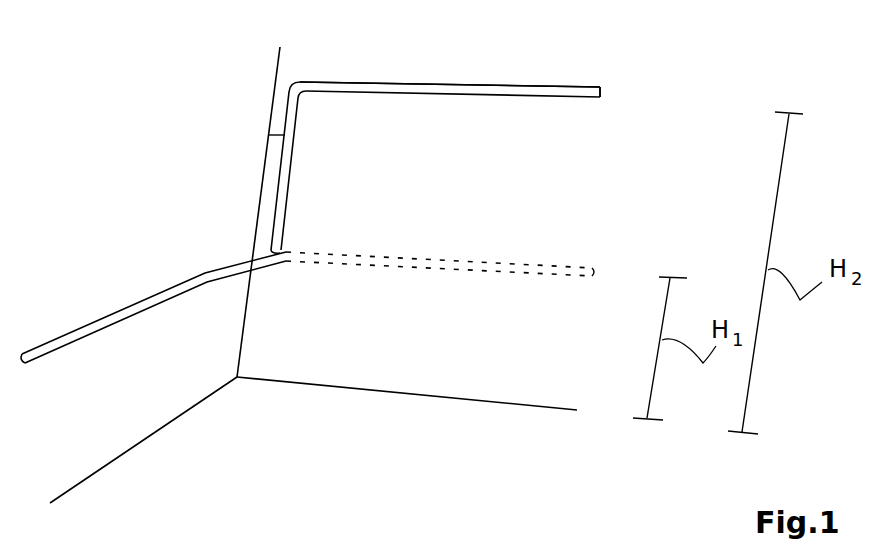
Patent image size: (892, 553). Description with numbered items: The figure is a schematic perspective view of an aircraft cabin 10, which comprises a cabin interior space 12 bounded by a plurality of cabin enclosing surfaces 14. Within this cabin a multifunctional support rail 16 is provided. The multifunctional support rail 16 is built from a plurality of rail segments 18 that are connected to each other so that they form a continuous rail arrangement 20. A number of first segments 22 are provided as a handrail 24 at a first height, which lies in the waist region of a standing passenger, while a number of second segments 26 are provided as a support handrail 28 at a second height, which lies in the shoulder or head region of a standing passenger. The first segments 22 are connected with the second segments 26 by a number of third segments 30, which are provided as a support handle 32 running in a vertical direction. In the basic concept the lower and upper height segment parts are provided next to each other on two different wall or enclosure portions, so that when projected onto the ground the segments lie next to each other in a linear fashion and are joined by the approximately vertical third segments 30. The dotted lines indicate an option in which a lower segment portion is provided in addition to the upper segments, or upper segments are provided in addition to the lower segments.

The aircraft cabin 10 is at (383, 431).
The cabin interior space 12 is at (291, 456).
The cabin enclosing surfaces 14 is at (85, 404).
The multifunctional support rail 16 is at (330, 191).
The rail segments 18 is at (84, 304).
The continuous rail arrangement 20 is at (197, 313).
The first segments 22 is at (163, 290).
The handrail 24 is at (97, 333).
The second segments 26 is at (470, 82).
The support handrail 28 is at (597, 78).
The third segments 30 is at (268, 135).
The support handle 32 is at (262, 162).